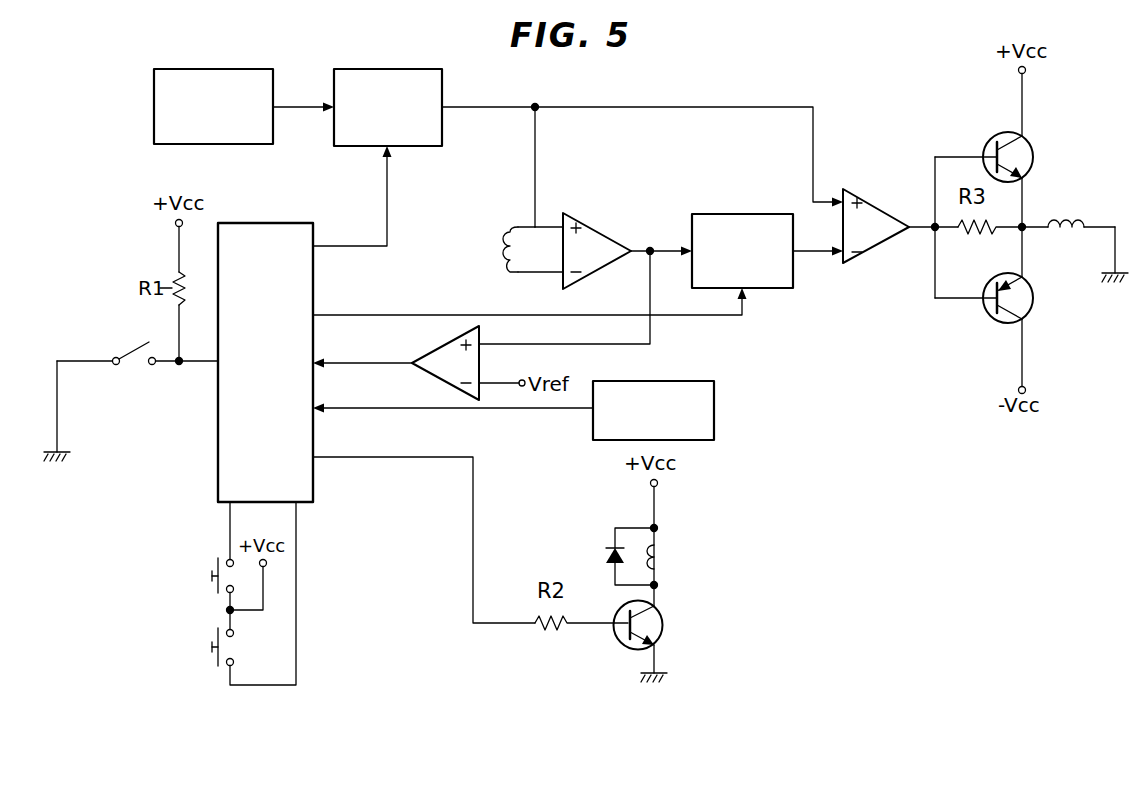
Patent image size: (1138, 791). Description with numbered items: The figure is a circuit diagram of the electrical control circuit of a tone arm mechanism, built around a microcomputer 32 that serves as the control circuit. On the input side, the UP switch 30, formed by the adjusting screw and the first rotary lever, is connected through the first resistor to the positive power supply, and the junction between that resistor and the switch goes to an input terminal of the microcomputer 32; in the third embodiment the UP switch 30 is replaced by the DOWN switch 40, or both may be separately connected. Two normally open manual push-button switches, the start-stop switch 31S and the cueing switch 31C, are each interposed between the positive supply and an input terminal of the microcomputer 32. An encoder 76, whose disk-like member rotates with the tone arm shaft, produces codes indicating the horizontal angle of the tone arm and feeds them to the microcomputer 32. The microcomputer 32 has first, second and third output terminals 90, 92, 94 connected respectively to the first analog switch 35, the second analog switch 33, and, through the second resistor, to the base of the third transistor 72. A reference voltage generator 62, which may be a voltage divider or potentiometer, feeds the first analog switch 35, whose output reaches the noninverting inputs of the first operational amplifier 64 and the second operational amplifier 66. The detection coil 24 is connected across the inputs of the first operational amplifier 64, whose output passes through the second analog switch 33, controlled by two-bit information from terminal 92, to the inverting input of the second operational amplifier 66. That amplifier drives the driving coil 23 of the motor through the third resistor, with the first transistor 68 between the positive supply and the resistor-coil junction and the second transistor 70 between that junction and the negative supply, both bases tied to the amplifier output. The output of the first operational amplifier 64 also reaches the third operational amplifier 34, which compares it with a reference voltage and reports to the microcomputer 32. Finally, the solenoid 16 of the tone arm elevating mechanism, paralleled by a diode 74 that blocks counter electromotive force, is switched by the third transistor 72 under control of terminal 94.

The reference voltage generator 62 is at (215, 69).
The first analog switch 35 is at (395, 69).
The microcomputer 32 is at (256, 223).
The first output terminal 90 is at (318, 246).
The second output terminal 92 is at (318, 315).
The third output terminal 94 is at (318, 457).
The UP switch 30 is at (133, 370).
The DOWN switch 40 is at (137, 374).
The start-stop switch 31S is at (196, 586).
The cueing switch 31C is at (198, 664).
The detection coil 24 is at (504, 248).
The first operational amplifier 64 is at (590, 229).
The second analog switch 33 is at (757, 214).
The second operational amplifier 66 is at (885, 222).
The first transistor 68 is at (1033, 147).
The second transistor 70 is at (1030, 312).
The driving coil 23 is at (1062, 224).
The third operational amplifier 34 is at (430, 346).
The encoder 76 is at (667, 381).
The diode 74 is at (605, 556).
The solenoid 16 is at (662, 556).
The third transistor 72 is at (664, 616).